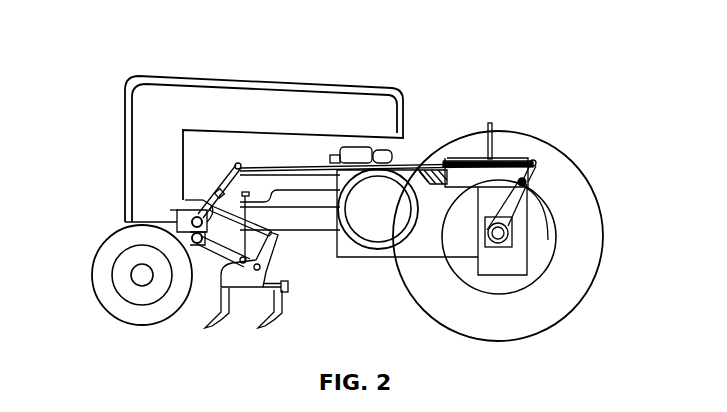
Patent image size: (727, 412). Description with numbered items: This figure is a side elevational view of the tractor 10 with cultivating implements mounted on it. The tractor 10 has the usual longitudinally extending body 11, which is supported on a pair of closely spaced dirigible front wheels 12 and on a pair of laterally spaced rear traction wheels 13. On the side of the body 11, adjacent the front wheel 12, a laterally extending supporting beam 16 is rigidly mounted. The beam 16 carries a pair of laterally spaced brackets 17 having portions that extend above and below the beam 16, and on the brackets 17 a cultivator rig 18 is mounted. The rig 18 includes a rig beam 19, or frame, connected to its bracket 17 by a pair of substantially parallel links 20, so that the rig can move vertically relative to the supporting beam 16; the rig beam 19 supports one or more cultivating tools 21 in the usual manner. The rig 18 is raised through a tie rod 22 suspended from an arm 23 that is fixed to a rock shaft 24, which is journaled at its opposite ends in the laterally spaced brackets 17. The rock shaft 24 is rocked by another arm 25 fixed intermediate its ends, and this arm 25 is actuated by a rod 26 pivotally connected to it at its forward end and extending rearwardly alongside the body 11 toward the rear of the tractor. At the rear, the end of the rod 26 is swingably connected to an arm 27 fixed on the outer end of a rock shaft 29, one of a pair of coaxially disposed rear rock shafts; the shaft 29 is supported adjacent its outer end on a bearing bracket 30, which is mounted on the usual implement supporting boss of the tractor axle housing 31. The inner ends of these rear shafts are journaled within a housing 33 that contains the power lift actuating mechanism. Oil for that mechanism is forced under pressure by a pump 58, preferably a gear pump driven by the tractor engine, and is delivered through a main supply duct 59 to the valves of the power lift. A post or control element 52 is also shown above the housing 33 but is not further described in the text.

The tractor 10 is at (224, 70).
The body 11 is at (449, 237).
The front wheels 12 is at (105, 256).
The rear traction wheels 13 is at (576, 178).
The supporting beam 16 is at (178, 210).
The brackets 17 is at (204, 203).
The cultivator rig 18 is at (291, 301).
The rig beam 19 is at (276, 261).
The parallel links 20 is at (224, 248).
The cultivating tools 21 is at (254, 328).
The tie rod 22 is at (255, 211).
The arm 23 is at (249, 193).
The rock shaft 24 is at (214, 188).
The arm 25 is at (228, 168).
The rod 26 is at (299, 166).
The arms 27 is at (537, 165).
The rock shaft 29 is at (528, 184).
The bearing brackets 30 is at (528, 232).
The axle housings 31 is at (498, 246).
The housing 33 is at (462, 160).
The post 52 is at (493, 127).
The pump 58 is at (393, 152).
The main supply duct 59 is at (428, 182).